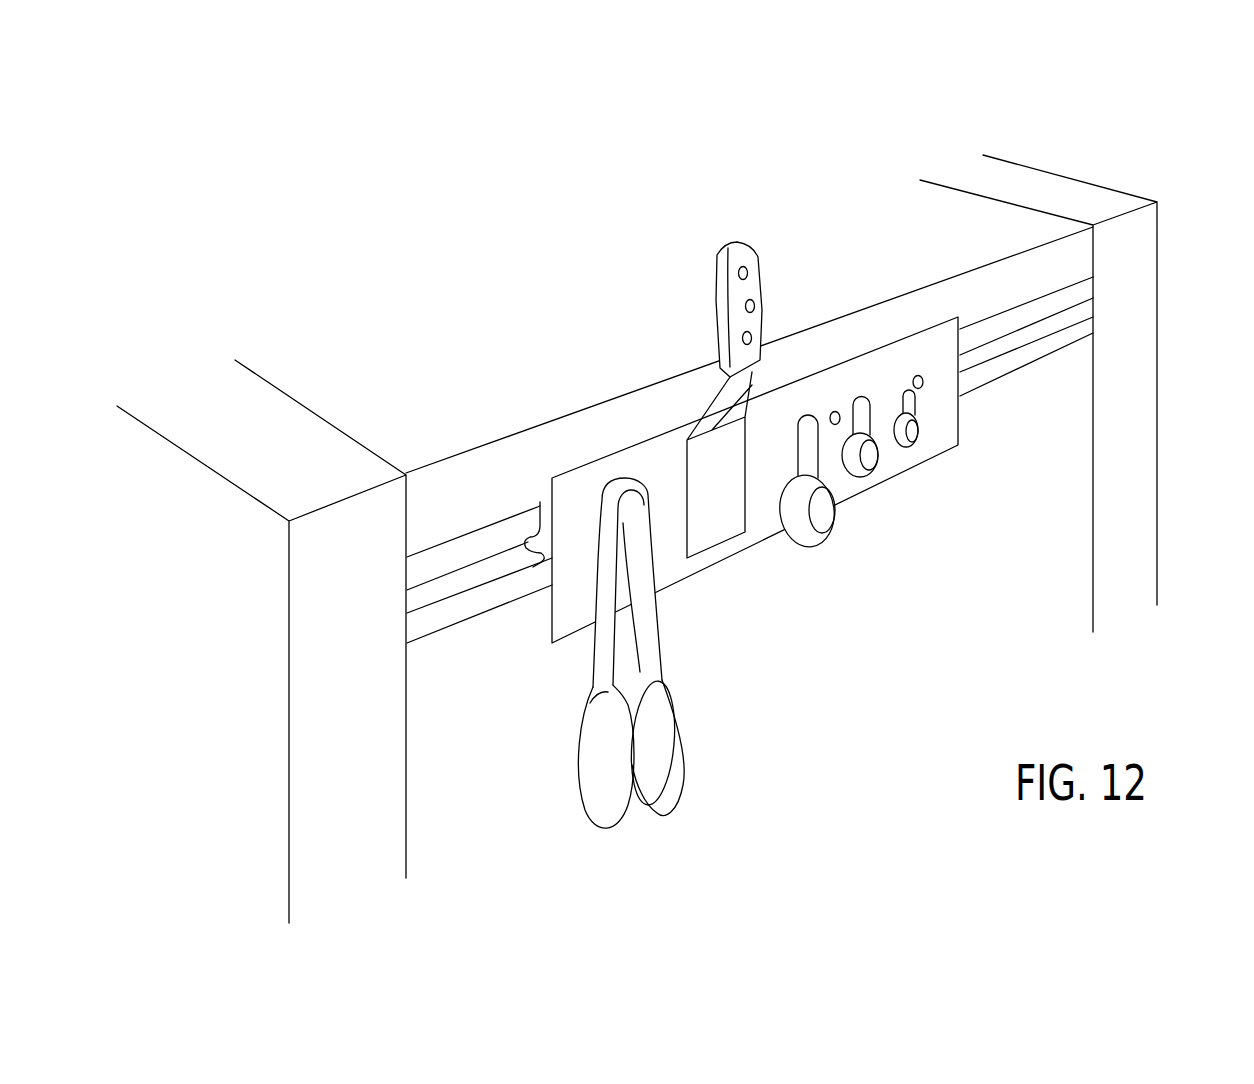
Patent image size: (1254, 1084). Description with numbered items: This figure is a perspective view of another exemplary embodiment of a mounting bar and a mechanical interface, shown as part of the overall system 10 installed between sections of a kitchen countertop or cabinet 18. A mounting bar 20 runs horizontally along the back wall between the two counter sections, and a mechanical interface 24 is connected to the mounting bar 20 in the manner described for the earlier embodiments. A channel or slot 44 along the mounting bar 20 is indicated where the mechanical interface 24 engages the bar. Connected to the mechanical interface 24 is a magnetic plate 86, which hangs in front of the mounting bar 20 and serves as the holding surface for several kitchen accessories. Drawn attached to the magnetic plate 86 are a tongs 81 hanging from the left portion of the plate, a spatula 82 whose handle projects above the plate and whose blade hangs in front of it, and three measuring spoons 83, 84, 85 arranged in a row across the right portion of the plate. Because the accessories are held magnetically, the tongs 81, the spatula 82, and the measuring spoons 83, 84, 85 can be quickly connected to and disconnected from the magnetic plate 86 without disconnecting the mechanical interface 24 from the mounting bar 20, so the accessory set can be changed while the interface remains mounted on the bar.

The kitchen appliance accessory system 10 is at (943, 203).
The cabinet / countertop 18 is at (481, 757).
The mounting bar 20 is at (443, 567).
The mechanical interface 24 is at (545, 521).
The rail channel 44 is at (425, 614).
The tongs 81 is at (685, 770).
The spatula 82 is at (712, 525).
The measuring spoon 83 is at (822, 518).
The measuring spoon 84 is at (872, 457).
The measuring spoon 85 is at (917, 432).
The magnetic plate 86 is at (840, 383).